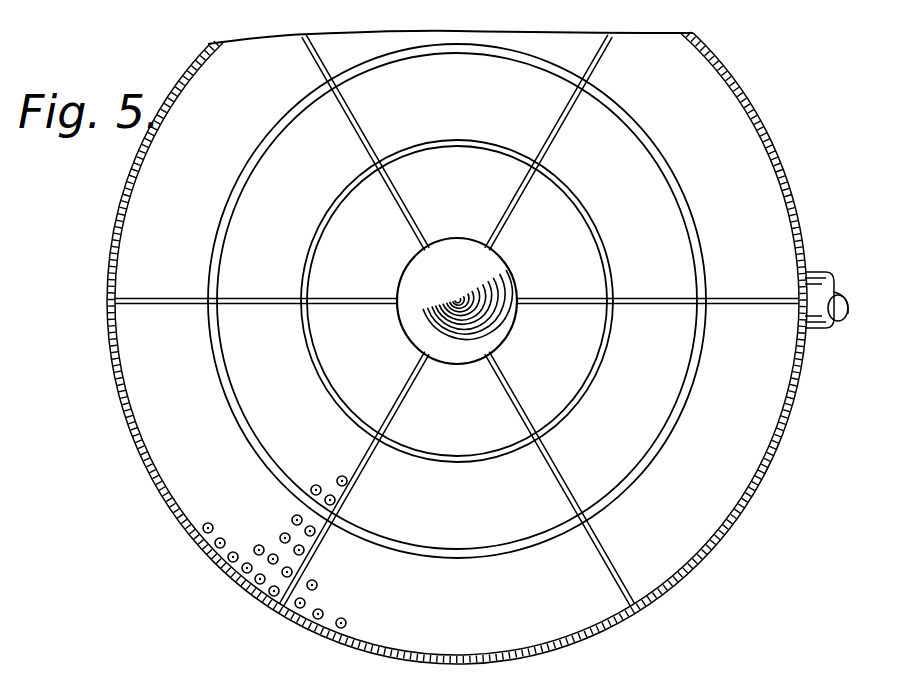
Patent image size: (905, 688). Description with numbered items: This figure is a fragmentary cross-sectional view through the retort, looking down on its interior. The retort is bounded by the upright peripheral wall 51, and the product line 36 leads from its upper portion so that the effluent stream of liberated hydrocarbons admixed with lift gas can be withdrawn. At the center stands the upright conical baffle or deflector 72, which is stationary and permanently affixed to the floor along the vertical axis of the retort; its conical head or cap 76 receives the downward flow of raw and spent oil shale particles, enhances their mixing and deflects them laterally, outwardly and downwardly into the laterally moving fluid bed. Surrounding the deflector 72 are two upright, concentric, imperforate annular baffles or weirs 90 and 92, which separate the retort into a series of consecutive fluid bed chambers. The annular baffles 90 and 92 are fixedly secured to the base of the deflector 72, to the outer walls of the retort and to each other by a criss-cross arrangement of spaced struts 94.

The upright peripheral wall 51 is at (112, 386).
The product line 36 is at (822, 270).
The conical baffle or deflector 72 is at (508, 341).
The conical head or cap 76 is at (498, 282).
The annular baffle or weir 90 is at (570, 410).
The annular baffle or weir 92 is at (641, 472).
The struts 94 is at (562, 492).